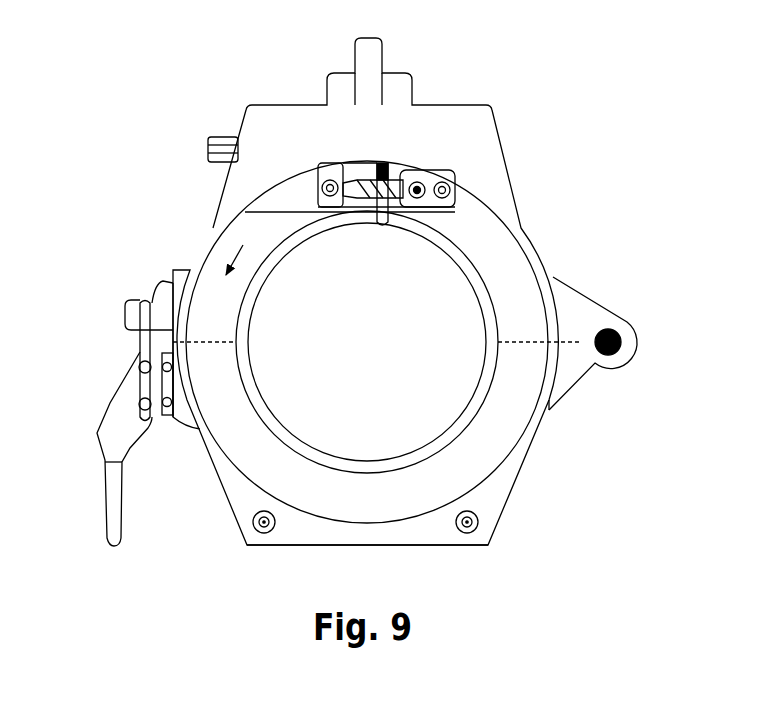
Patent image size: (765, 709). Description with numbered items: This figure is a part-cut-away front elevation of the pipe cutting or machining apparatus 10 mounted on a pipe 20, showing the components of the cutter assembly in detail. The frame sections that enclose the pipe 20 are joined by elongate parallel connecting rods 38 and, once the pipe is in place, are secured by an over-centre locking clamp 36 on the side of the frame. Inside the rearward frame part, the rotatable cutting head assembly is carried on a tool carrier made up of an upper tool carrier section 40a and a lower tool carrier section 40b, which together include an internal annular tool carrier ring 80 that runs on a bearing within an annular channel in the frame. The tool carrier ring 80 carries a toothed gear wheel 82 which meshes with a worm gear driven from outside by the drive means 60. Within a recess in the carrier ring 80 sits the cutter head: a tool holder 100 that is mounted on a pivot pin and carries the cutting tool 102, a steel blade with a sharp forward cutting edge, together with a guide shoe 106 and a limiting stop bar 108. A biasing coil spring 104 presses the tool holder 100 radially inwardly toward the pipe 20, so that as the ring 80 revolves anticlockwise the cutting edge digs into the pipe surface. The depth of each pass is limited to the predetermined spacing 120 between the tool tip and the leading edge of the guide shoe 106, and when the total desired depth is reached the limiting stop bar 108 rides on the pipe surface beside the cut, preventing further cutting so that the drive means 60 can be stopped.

The pipe cutting or machining apparatus 10 is at (550, 510).
The pipe 20 is at (316, 236).
The over-centre locking clamp 36 is at (123, 410).
The connecting rod 38 is at (265, 535).
The upper tool carrier section 40a is at (524, 300).
The lower tool carrier section 40b is at (520, 373).
The drive means 60 is at (208, 138).
The tool carrier ring 80 is at (485, 235).
The toothed gear wheel 82 is at (238, 250).
The tool holder 100 is at (418, 168).
The cutting tool 102 is at (343, 173).
The biasing coil spring 104 is at (383, 162).
The guide shoe 106 is at (318, 210).
The limiting stop bar 108 is at (360, 214).
The predetermined spacing 120 is at (388, 226).